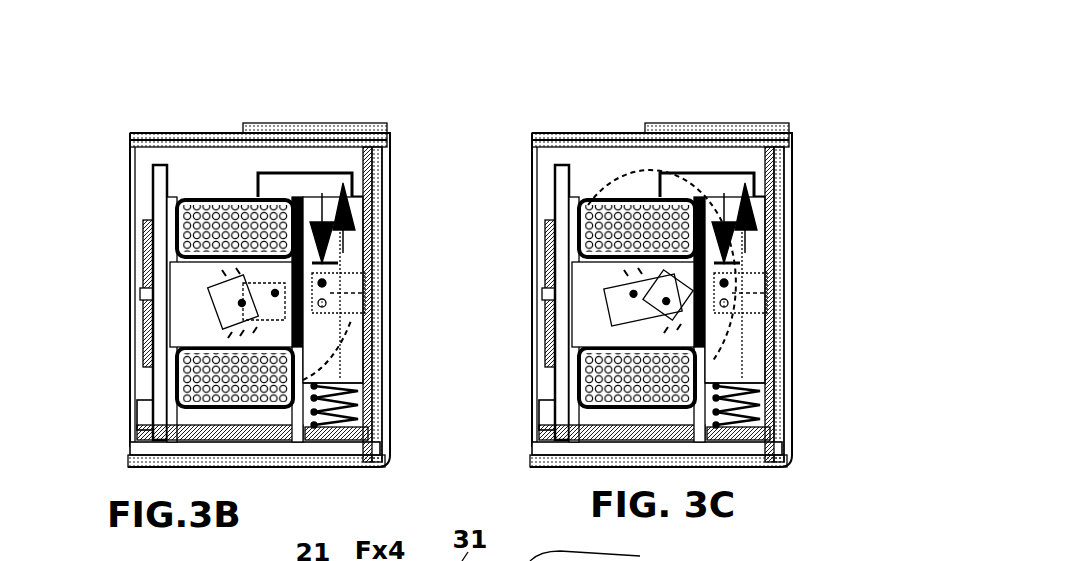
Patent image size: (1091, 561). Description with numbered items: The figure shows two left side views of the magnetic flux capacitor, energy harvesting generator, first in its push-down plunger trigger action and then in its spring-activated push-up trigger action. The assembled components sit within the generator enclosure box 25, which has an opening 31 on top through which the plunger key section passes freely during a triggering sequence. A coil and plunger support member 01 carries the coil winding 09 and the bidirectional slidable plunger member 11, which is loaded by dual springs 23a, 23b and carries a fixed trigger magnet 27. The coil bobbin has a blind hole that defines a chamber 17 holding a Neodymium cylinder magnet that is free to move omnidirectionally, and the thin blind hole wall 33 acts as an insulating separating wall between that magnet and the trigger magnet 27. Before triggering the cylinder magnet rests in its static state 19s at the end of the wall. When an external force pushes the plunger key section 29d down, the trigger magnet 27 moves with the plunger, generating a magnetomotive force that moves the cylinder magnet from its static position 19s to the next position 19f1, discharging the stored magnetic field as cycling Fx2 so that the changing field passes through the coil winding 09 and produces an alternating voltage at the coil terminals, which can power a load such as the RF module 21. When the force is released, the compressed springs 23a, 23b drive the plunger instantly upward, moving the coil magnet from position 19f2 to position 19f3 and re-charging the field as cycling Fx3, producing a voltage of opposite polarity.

In FIG. 3B, the coil and plunger support member 01 is at (362, 450).
In FIG. 3C, the coil and plunger support member 01 is at (641, 472).
In FIG. 3B, the coil winding 09 is at (203, 207).
In FIG. 3C, the coil winding 09 is at (595, 281).
In FIG. 3B, the slidable plunger member 11 is at (358, 243).
In FIG. 3C, the slidable plunger member 11 is at (793, 290).
In FIG. 3B, the chamber 17 is at (188, 320).
In FIG. 3C, the chamber 17 is at (573, 302).
In FIG. 3B, the cylinder gyrator magnet in static state 19s is at (178, 232).
In FIG. 3B, the magnet position at point PT-B 19f1 is at (208, 292).
In FIG. 3C, the coil magnet at point PT-B 19f2 is at (570, 285).
In FIG. 3C, the coil magnet at point PT-A 19f3 is at (573, 300).
In FIG. 3B, the ISM Band RF transmitter or transceiver module 21 is at (153, 163).
In FIG. 3C, the ISM Band RF transmitter or transceiver module 21 is at (596, 264).
In FIG. 3B, the spring 23a is at (362, 412).
In FIG. 3C, the spring 23a is at (784, 397).
In FIG. 3B, the spring 23b is at (380, 427).
In FIG. 3C, the spring 23b is at (791, 420).
In FIG. 3B, the generator enclosure box 25 is at (390, 388).
In FIG. 3C, the generator enclosure box 25 is at (695, 306).
In FIG. 3B, the trigger magnet 27 is at (350, 277).
In FIG. 3C, the trigger magnet 27 is at (780, 267).
In FIG. 3B, the plunger key section in push-down state 29d is at (350, 172).
In FIG. 3B, the opening 31 is at (298, 125).
In FIG. 3C, the opening 31 is at (663, 77).
In FIG. 3B, the blind hole wall 33 is at (345, 325).
In FIG. 3C, the blind hole wall 33 is at (776, 304).
In FIG. 3B, the magnetic field discharge cycling Fx2 is at (247, 210).
In FIG. 3C, the magnetic field re-charge cycling Fx3 is at (672, 210).